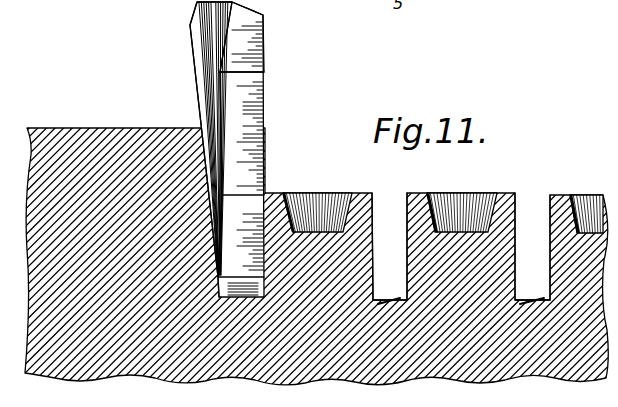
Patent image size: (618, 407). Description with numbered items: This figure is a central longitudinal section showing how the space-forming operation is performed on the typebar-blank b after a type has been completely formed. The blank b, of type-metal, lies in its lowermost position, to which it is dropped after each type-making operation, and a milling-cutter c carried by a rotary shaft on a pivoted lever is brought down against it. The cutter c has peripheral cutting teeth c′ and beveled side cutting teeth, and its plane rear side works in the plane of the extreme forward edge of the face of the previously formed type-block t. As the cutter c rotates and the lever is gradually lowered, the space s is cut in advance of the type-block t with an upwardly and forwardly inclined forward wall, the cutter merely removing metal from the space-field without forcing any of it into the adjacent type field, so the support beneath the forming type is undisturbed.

The blank b is at (115, 140).
The milling-cutter c is at (267, 132).
The peripheral cutting teeth c′ is at (245, 72).
The space s is at (280, 197).
The type-block t is at (353, 260).